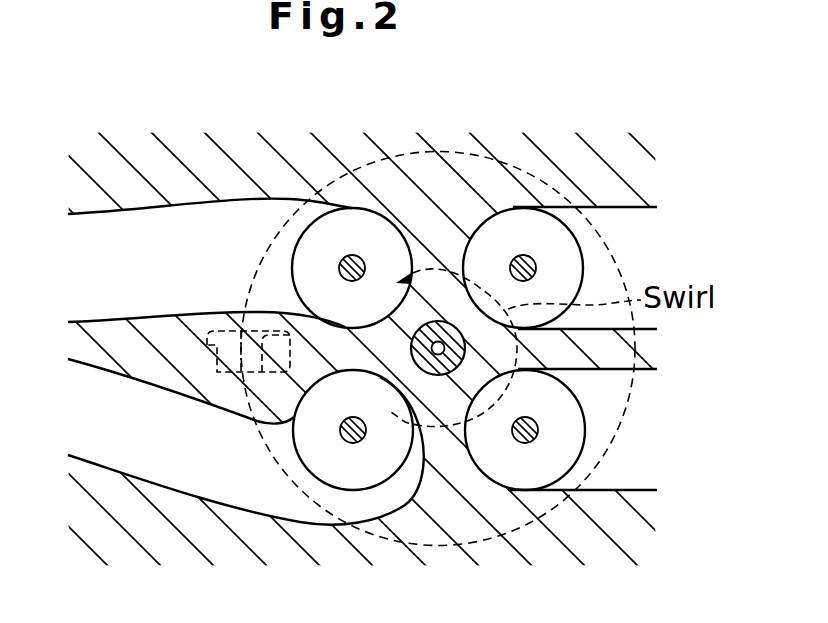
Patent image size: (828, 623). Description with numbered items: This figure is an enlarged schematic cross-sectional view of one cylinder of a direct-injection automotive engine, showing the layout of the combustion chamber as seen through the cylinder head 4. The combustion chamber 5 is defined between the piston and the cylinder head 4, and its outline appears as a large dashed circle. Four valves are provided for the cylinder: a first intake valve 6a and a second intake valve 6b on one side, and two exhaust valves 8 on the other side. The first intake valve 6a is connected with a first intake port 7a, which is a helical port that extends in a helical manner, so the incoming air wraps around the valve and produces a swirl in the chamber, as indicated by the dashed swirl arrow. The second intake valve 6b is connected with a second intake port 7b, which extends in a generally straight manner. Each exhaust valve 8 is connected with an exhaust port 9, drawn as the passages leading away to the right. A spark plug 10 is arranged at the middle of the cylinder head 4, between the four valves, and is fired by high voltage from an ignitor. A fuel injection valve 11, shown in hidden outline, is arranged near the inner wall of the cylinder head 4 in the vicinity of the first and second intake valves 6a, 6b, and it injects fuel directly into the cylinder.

The cylinder head 4 is at (613, 152).
The combustion chamber 5 is at (440, 151).
The first intake valve 6a is at (363, 472).
The second intake valve 6b is at (386, 209).
The first intake port 7a is at (218, 488).
The second intake port 7b is at (193, 220).
The exhaust valve 8 is at (515, 218).
The exhaust port 9 is at (622, 215).
The spark plug 10 is at (452, 321).
The fuel injection valve 11 is at (212, 313).